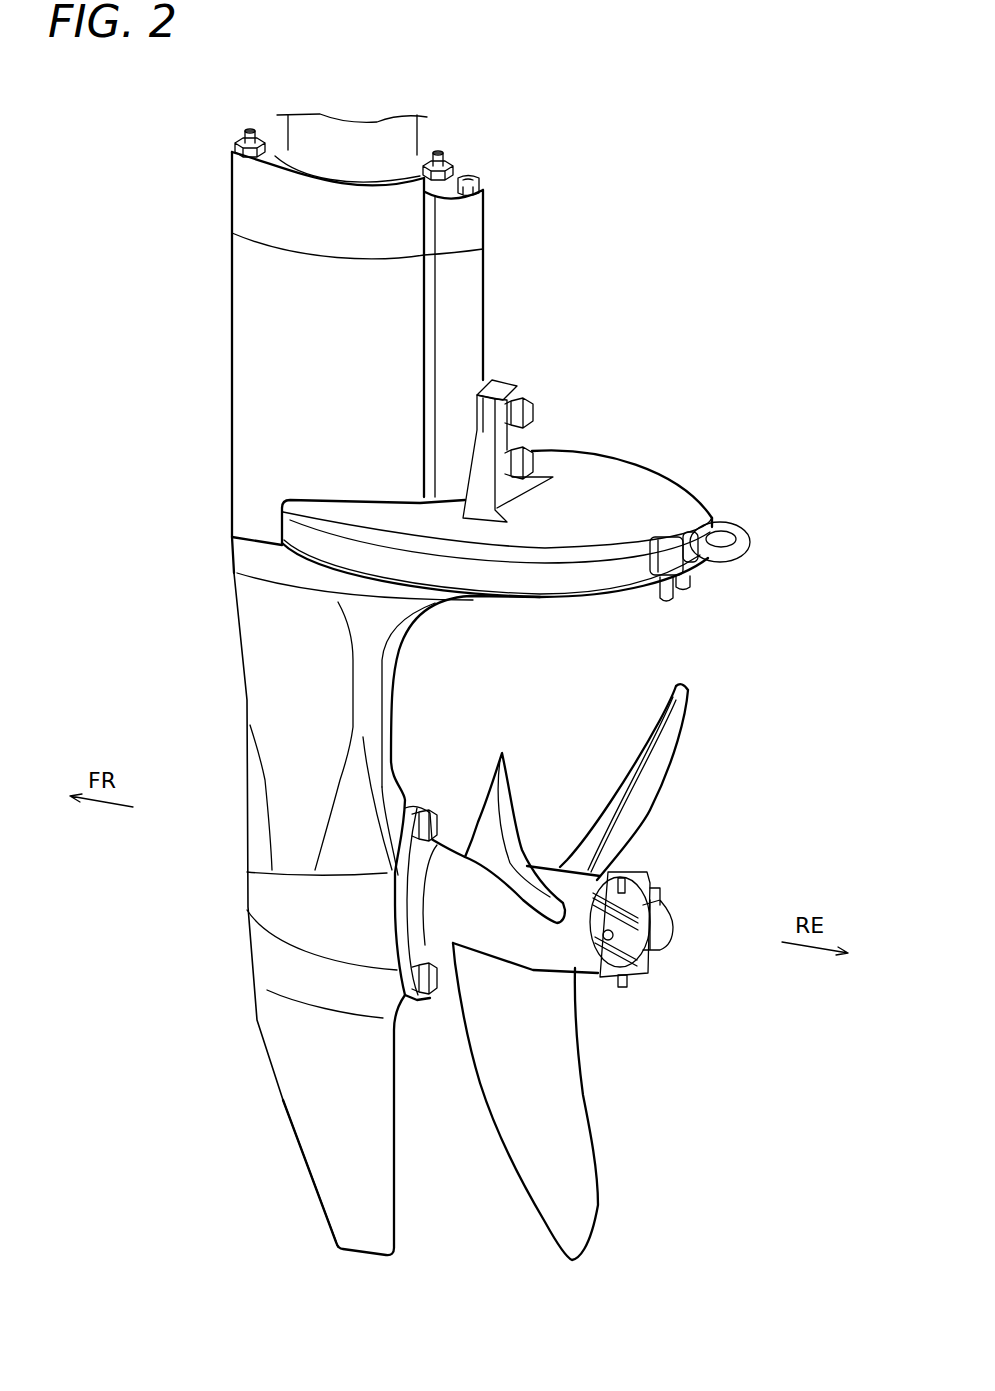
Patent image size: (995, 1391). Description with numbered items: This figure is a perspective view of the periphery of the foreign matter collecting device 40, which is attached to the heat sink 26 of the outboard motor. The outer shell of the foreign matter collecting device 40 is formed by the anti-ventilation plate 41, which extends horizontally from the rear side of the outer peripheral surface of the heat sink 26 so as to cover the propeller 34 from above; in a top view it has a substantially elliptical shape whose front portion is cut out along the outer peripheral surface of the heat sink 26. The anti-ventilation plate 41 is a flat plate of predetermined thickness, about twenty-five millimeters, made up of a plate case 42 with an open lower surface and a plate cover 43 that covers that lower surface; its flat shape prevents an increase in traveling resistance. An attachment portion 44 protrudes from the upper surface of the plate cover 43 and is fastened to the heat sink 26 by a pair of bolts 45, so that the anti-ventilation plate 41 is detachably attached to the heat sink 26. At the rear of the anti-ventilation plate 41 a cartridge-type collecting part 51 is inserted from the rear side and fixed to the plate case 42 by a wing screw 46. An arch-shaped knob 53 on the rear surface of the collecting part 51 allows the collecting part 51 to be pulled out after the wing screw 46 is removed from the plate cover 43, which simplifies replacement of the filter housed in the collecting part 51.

The heat sink 26 is at (485, 278).
The propeller 34 is at (650, 790).
The foreign matter collecting device 40 is at (670, 440).
The anti-ventilation plate 41 is at (685, 478).
The plate case 42 is at (583, 466).
The plate cover 43 is at (553, 598).
The attachment portion 44 is at (503, 378).
The bolts 45 is at (528, 428).
The wing screw 46 is at (668, 602).
The collecting part 51 is at (722, 522).
The knob 53 is at (740, 563).